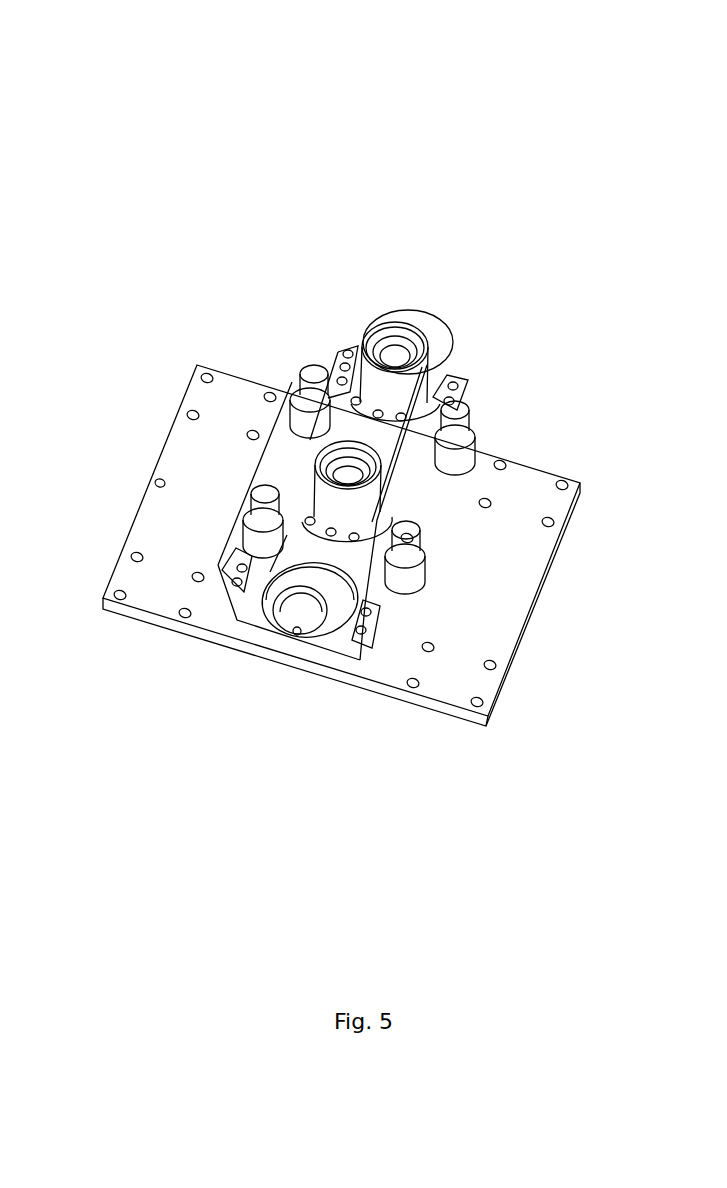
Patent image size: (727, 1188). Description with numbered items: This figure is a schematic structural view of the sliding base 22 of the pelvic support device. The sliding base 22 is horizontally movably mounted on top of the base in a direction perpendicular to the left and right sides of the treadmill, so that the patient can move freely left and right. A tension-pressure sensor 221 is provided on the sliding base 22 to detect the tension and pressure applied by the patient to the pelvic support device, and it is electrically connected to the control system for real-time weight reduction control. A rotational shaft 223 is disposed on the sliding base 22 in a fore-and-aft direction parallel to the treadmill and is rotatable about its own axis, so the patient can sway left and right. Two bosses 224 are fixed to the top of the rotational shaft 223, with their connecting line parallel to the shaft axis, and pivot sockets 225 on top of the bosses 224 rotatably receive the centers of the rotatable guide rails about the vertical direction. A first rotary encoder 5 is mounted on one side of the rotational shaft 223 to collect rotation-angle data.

The sliding base 22 is at (248, 118).
The tension-pressure sensor 221 is at (402, 478).
The rotational shaft 223 is at (310, 560).
The bosses 224 is at (340, 358).
The pivot sockets 225 is at (405, 345).
The first rotary encoder 5 is at (296, 634).